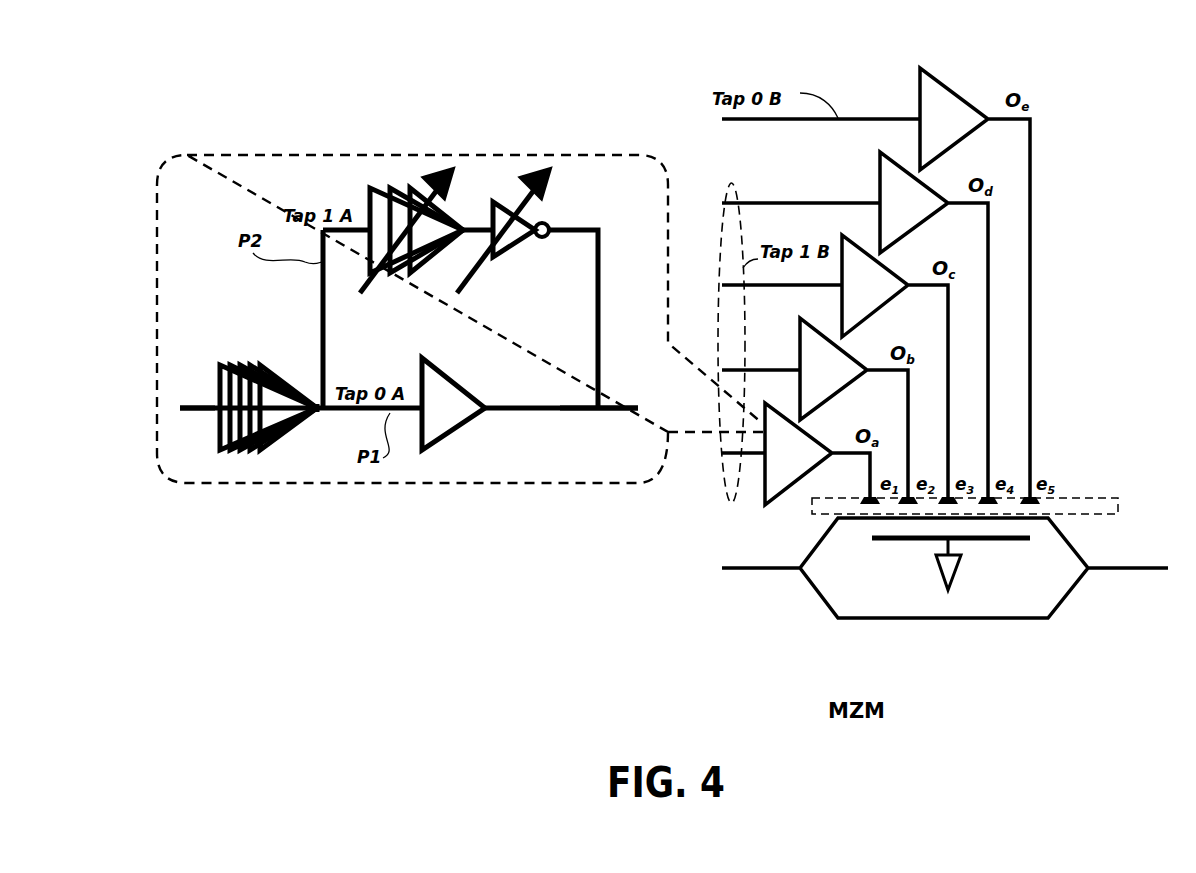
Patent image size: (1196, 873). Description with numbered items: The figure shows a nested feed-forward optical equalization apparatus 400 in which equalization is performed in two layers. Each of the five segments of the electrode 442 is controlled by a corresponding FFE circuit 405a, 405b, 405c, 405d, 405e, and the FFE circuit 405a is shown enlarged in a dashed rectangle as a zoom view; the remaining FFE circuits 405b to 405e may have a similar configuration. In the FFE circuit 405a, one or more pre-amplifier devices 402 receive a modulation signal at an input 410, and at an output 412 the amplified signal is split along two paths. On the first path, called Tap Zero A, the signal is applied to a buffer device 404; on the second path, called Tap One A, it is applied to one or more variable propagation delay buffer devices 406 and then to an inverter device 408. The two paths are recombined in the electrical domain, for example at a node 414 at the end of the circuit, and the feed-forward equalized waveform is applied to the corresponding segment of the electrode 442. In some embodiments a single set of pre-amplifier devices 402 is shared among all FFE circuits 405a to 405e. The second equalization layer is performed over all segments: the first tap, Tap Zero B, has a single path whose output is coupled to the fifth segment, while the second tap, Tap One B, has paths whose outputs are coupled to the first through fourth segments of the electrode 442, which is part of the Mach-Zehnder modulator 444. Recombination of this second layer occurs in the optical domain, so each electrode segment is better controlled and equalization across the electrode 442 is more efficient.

The nested FFOE apparatus 400 is at (214, 73).
The pre-amplifier device 402 is at (280, 365).
The buffer device 404 is at (455, 412).
The FFE circuit 405a is at (256, 193).
The FFE circuit 405b is at (855, 380).
The FFE circuit 405c is at (897, 295).
The FFE circuit 405d is at (937, 213).
The FFE circuit 405e is at (977, 129).
The variable propagation delay buffer device 406 is at (400, 188).
The inverter device 408 is at (547, 223).
The input 410 is at (184, 406).
The output 412 is at (320, 412).
The output node 414 is at (589, 412).
The electrode 442 is at (1120, 505).
The Mach-Zehnder modulator 444 is at (915, 622).